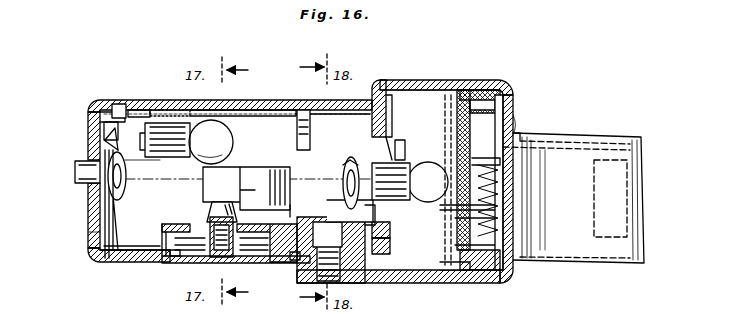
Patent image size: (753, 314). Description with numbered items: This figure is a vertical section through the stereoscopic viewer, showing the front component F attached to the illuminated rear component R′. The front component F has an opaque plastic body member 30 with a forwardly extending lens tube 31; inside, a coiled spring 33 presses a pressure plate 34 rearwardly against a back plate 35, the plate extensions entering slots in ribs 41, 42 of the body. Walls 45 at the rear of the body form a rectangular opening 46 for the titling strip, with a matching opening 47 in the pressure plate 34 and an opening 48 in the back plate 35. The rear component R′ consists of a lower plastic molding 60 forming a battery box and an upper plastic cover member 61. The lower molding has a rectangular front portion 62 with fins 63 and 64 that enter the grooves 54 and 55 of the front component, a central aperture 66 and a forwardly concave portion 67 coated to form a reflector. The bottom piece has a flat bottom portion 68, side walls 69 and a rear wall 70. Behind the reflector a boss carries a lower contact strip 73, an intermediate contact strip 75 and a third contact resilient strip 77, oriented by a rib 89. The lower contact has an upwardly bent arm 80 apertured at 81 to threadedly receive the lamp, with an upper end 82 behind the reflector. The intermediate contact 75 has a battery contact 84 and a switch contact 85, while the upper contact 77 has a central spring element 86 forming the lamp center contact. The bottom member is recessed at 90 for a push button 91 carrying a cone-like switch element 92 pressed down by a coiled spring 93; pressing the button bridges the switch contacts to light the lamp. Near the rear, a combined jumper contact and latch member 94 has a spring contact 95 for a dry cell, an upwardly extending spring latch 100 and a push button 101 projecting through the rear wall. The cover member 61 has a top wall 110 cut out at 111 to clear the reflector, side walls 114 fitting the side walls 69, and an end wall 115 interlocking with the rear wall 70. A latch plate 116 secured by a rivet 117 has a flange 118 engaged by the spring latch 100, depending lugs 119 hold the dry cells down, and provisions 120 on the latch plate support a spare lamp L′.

The body member 30 is at (518, 82).
The lens tube 31 is at (583, 150).
The coiled spring 33 is at (497, 195).
The pressure plate 34 is at (455, 207).
The back plate 35 is at (455, 228).
The rib 41 is at (497, 94).
The rib 42 is at (452, 272).
The walls 45 is at (500, 164).
The rectangular opening 46 is at (518, 135).
The opening 47 is at (456, 135).
The opening 48 is at (456, 121).
The groove 54 is at (488, 99).
The groove 55 is at (500, 284).
The lower plastic molding 60 is at (145, 262).
The upper plastic cover member 61 is at (150, 99).
The rectangular front portion 62 is at (424, 79).
The fin 63 is at (478, 89).
The fin 64 is at (475, 284).
The central aperture 66 is at (376, 210).
The forwardly concave portion 67 is at (396, 79).
The bottom portion 68 is at (102, 260).
The side wall 69 is at (144, 176).
The rear wall 70 is at (87, 212).
The lower contact strip 73 is at (372, 243).
The intermediate contact strip 75 is at (372, 228).
The third contact resilient strip 77 is at (352, 217).
The upwardly bent arm 80 is at (398, 202).
The aperture 81 is at (410, 160).
The upper end 82 is at (390, 125).
The battery contact 84 is at (344, 168).
The switch contact 85 is at (245, 167).
The spring element 86 is at (346, 183).
The rib 89 is at (296, 216).
The recess 90 is at (172, 262).
The push button 91 is at (187, 264).
The cone-like switch element 92 is at (210, 207).
The coiled spring 93 is at (240, 264).
The combined jumper contact and latch member 94 is at (116, 245).
The spring contact 95 is at (128, 172).
The spring latch 100 is at (102, 126).
The push button 101 is at (75, 172).
The top wall 110 is at (252, 99).
The cut out 111 is at (372, 90).
The side wall 114 is at (262, 136).
The end wall 115 is at (88, 112).
The latch plate 116 is at (140, 109).
The rivet 117 is at (119, 103).
The flange 118 is at (104, 144).
The depending lug 119 is at (202, 101).
The spare lamp support provisions 120 is at (166, 109).
The spare lamp L' is at (197, 138).
The rear component R' is at (67, 238).
The front component F is at (521, 118).